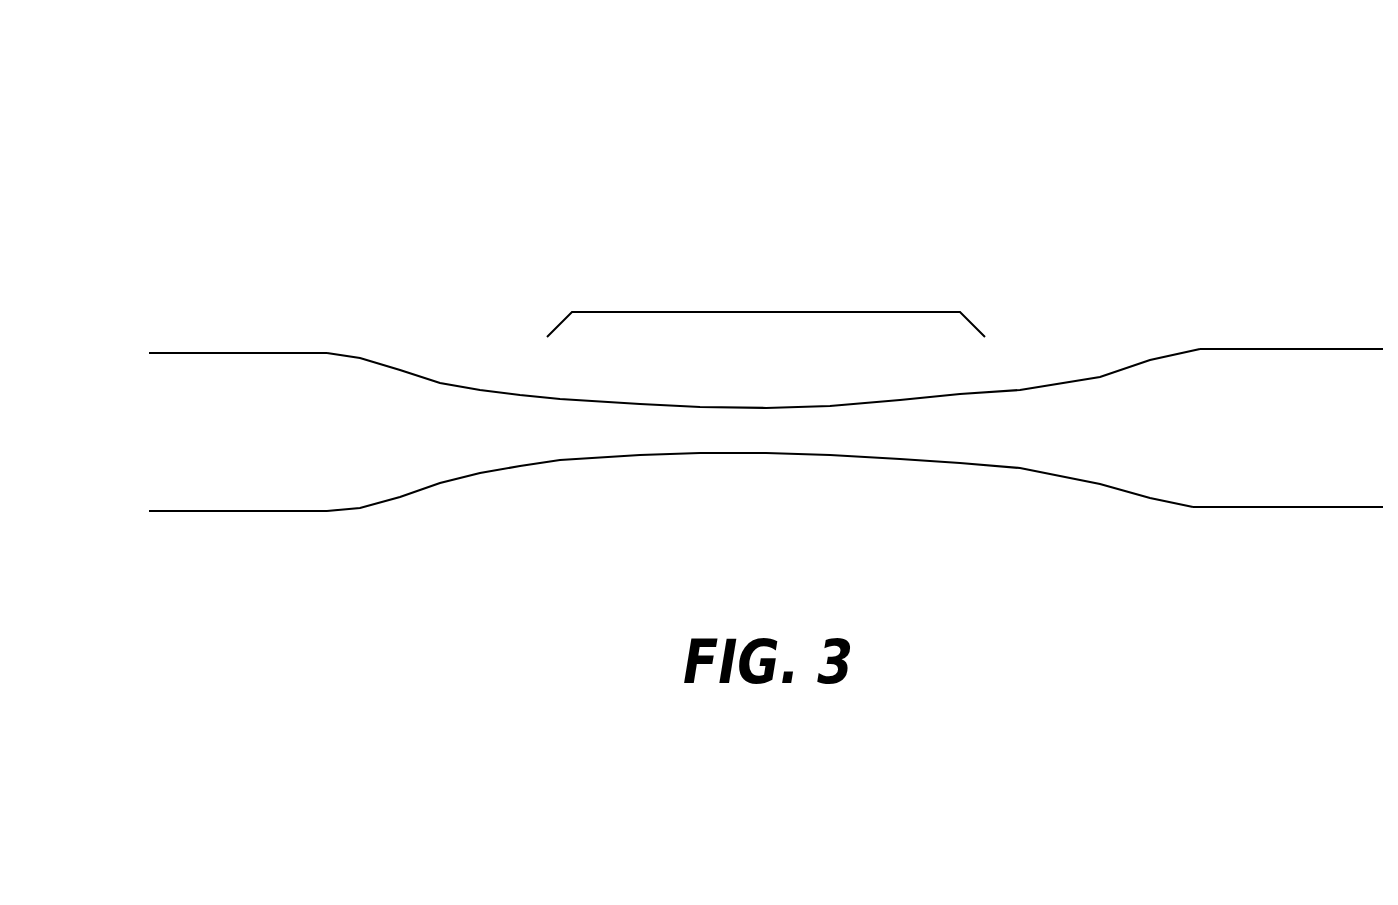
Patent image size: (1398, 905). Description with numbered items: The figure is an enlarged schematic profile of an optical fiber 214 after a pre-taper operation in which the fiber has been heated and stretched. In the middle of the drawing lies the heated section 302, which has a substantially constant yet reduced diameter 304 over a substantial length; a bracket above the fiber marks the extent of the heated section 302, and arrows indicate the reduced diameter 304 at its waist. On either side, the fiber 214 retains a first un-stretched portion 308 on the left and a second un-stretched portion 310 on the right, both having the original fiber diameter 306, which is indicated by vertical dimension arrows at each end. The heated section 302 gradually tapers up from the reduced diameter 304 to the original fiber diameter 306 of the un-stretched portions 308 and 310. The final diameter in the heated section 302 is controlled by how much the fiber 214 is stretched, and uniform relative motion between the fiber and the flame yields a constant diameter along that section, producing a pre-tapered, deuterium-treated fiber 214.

The fiber 214 is at (766, 289).
The heated section 302 is at (766, 406).
The reduced diameter 304 is at (766, 455).
The original fiber diameter 306 is at (258, 355).
The first un-stretched portion 308 is at (177, 305).
The second un-stretched portion 310 is at (1290, 327).